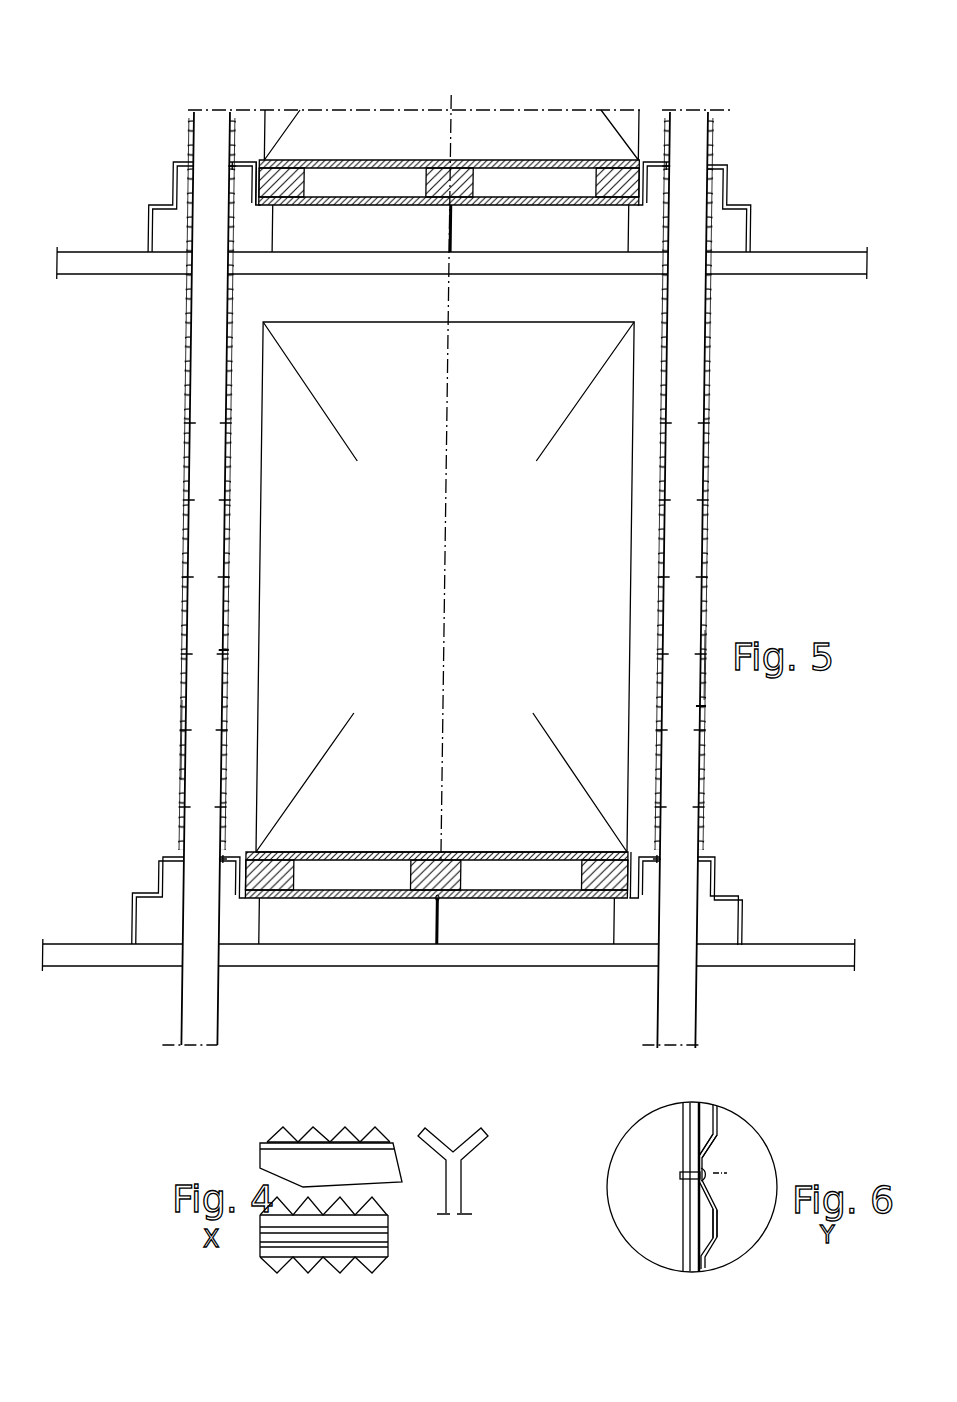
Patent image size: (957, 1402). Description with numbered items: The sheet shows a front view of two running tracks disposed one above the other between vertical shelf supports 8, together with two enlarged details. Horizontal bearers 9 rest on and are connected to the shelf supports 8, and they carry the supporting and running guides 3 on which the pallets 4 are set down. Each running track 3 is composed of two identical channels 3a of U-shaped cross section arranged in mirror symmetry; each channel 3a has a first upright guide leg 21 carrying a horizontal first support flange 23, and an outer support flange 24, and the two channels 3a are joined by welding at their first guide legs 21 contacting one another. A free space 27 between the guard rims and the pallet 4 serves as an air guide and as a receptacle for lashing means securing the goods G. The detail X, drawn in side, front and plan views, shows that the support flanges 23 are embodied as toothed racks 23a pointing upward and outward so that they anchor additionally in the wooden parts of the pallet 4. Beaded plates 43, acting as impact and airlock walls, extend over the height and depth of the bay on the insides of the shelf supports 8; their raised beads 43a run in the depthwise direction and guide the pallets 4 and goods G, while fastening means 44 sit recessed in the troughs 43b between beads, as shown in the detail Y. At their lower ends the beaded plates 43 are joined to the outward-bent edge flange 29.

In FIG. 5, the supporting and running guide 3 is at (112, 250).
In FIG. 5, the channel 3a is at (339, 224).
In FIG. 5, the pallet 4 is at (437, 168).
In FIG. 5, the vertical shelf support 8 is at (207, 681).
In FIG. 6, the vertical shelf support 8 is at (688, 1213).
In FIG. 5, the horizontal bearer 9 is at (93, 262).
In FIG. 5, the first upright guide leg 21 is at (461, 920).
In FIG. 4, the first upright guide leg 21 is at (278, 1163).
In FIG. 5, the first support flange 23 is at (452, 207).
In FIG. 4, the first support flange 23 is at (267, 1148).
In FIG. 4, the toothed rack 23a is at (312, 1130).
In FIG. 5, the outer support flange 24 is at (264, 206).
In FIG. 5, the free space 27 is at (255, 160).
In FIG. 5, the edge flange 29 is at (730, 175).
In FIG. 5, the beaded plate 43 is at (190, 140).
In FIG. 6, the beaded plate 43 is at (719, 1190).
In FIG. 5, the bead 43a is at (192, 766).
In FIG. 6, the bead 43a is at (718, 1226).
In FIG. 6, the trough 43b is at (712, 1157).
In FIG. 5, the fastening means 44 is at (227, 656).
In FIG. 6, the fastening means 44 is at (680, 1173).
In FIG. 5, the goods G is at (337, 134).
In FIG. 5, the detail X is at (397, 978).
In FIG. 5, the detail Y is at (271, 585).